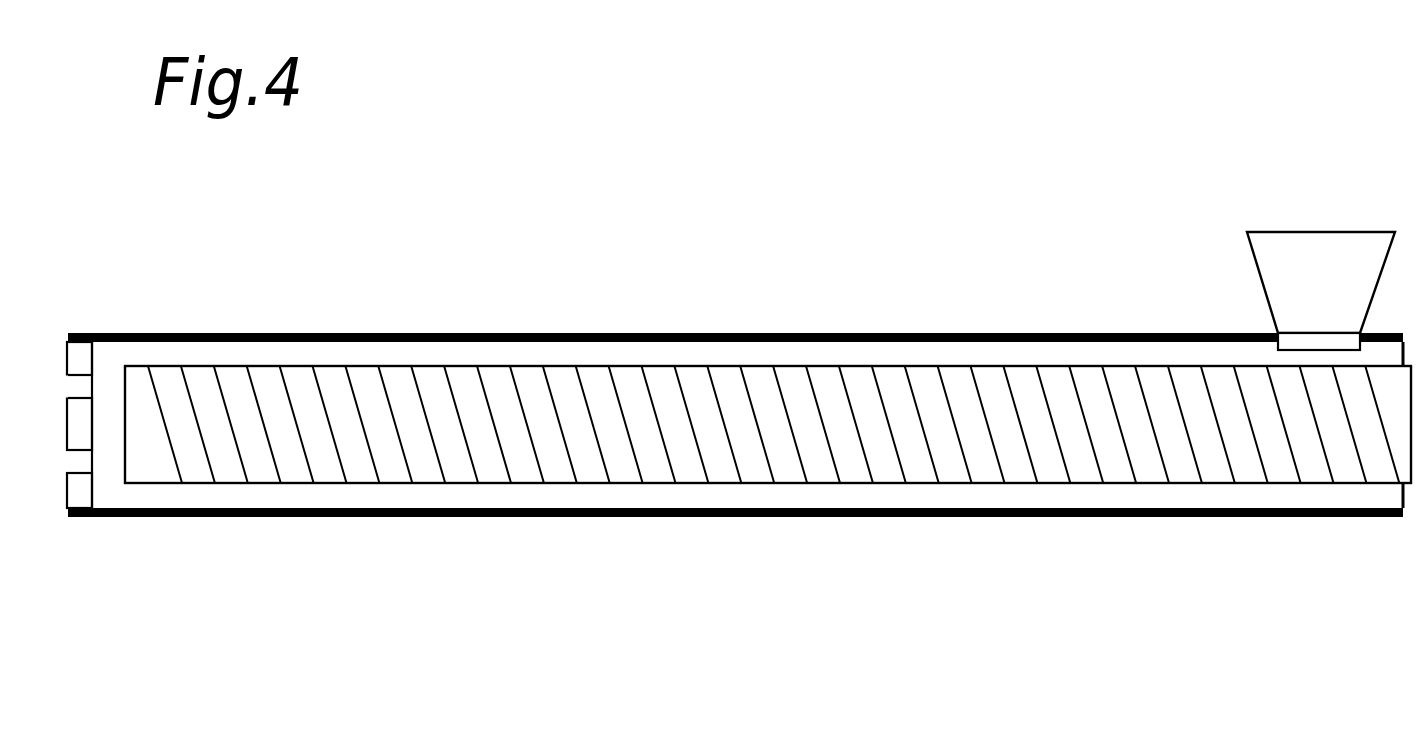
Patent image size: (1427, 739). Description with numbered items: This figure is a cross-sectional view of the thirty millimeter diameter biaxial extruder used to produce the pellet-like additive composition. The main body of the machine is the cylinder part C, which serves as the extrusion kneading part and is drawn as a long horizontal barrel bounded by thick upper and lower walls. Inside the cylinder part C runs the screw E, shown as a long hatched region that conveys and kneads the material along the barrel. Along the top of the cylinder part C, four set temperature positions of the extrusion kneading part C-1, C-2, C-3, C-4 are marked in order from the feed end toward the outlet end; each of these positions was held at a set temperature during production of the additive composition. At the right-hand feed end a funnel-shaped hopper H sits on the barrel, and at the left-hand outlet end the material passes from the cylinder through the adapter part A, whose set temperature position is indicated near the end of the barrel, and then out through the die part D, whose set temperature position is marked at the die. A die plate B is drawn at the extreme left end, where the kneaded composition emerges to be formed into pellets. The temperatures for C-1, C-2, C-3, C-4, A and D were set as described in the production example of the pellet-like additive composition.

The adapter part A is at (120, 465).
The die B is at (75, 453).
The cylinder part C is at (132, 601).
The set temperature position of extrusion kneading part C-1 is at (1075, 312).
The set temperature position of extrusion kneading part C-2 is at (763, 312).
The set temperature position of extrusion kneading part C-3 is at (486, 312).
The set temperature position of extrusion kneading part C-4 is at (248, 312).
The die part D is at (86, 402).
The screw E is at (712, 466).
The hopper H is at (1287, 285).